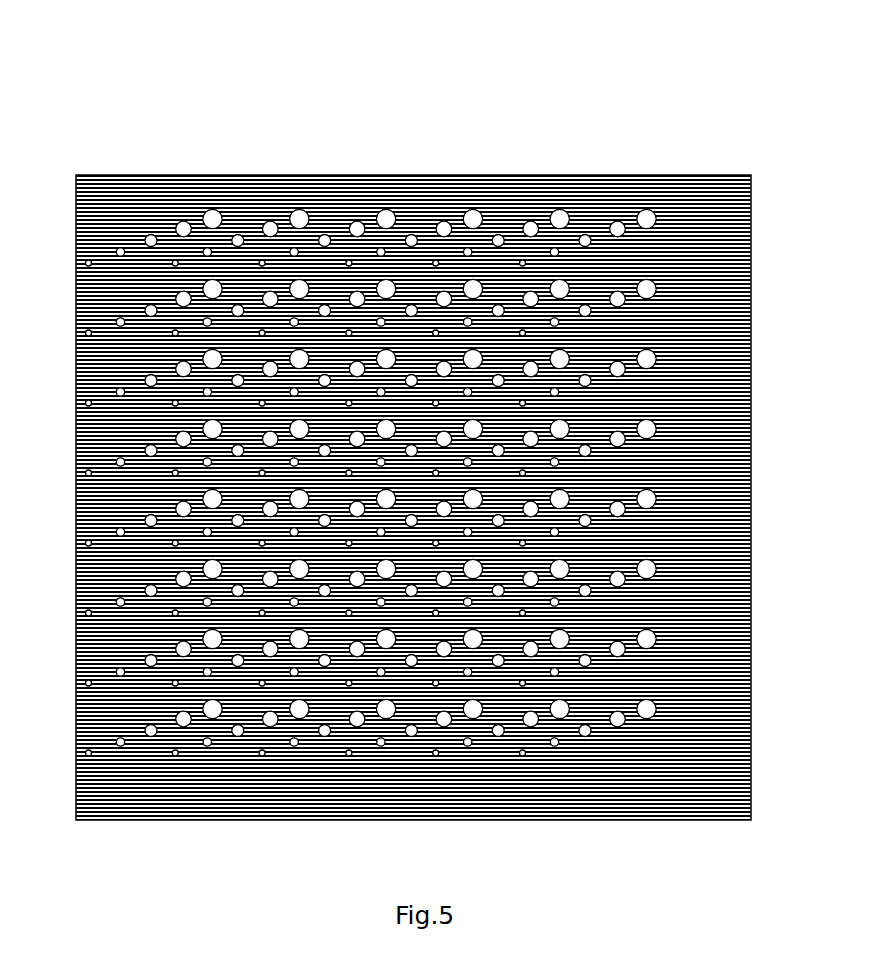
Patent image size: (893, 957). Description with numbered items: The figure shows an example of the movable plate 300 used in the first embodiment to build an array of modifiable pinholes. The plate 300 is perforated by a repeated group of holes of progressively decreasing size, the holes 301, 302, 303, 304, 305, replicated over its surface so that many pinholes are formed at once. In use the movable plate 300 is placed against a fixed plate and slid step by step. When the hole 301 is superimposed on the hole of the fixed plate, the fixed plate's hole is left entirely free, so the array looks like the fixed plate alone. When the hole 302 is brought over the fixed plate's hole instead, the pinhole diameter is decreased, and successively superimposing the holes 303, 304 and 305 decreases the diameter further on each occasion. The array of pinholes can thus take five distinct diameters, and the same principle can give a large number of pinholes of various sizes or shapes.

The movable plate 300 is at (413, 461).
The hole 301 is at (442, 140).
The hole 302 is at (411, 155).
The hole 303 is at (383, 172).
The hole 304 is at (351, 190).
The hole 305 is at (318, 206).